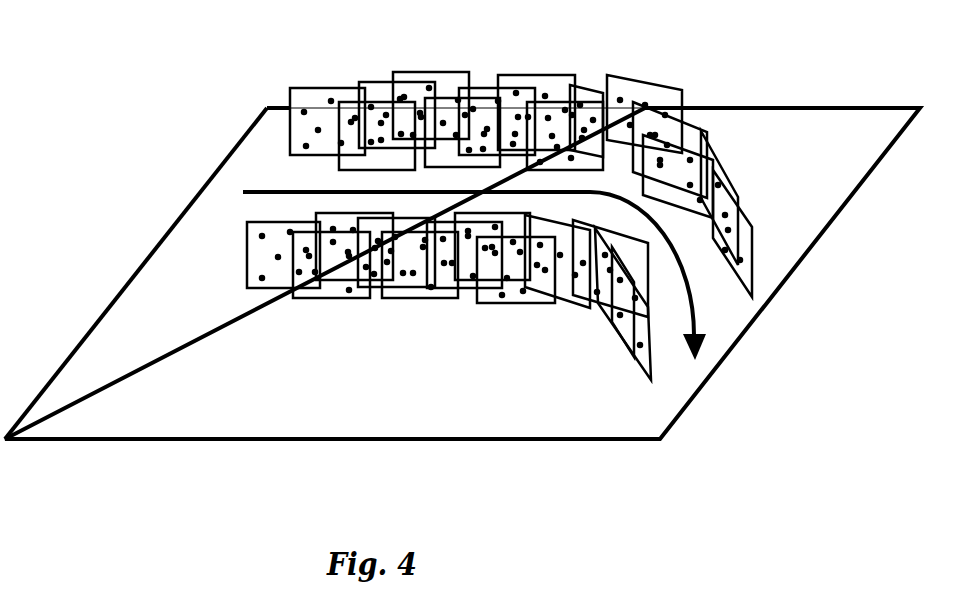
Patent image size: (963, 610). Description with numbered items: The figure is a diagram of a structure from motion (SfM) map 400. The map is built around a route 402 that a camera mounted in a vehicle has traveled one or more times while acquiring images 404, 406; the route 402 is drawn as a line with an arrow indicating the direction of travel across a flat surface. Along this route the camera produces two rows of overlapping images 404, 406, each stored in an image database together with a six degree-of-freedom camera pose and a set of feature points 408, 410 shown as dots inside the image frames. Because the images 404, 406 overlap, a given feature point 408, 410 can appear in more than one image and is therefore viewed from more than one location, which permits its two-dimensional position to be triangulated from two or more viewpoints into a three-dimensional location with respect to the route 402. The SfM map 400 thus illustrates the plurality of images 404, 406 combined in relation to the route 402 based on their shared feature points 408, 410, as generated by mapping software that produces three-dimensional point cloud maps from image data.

The SfM map 400 is at (190, 440).
The route 402 is at (267, 190).
The images 404 is at (432, 155).
The images 406 is at (347, 274).
The feature points 408 is at (300, 130).
The feature points 410 is at (257, 260).